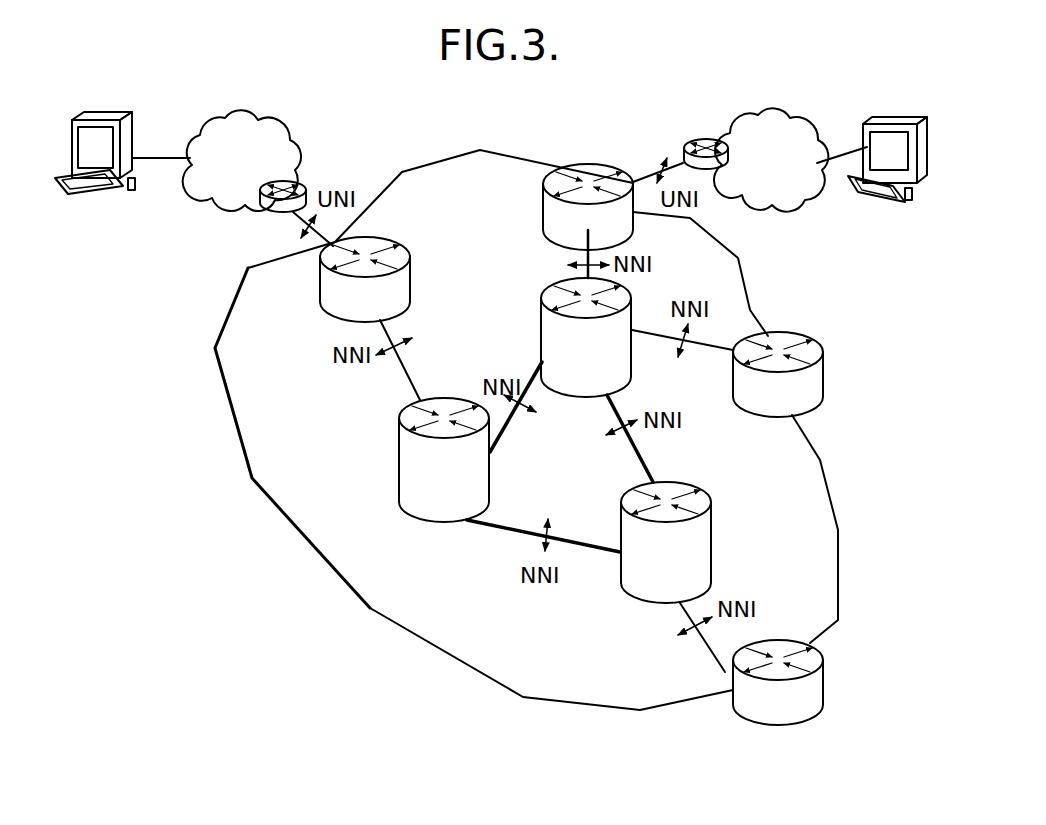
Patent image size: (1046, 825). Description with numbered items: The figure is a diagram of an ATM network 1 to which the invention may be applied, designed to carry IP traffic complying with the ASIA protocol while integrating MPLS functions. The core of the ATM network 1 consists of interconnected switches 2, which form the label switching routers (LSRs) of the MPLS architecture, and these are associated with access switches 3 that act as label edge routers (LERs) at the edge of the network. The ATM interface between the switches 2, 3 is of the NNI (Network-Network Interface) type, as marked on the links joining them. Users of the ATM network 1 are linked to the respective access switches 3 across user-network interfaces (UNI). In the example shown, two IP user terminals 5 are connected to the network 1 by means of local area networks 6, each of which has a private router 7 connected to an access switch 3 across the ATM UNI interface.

The ATM network 1 is at (289, 520).
The switch 2 is at (398, 465).
The access switch 3 is at (393, 240).
The IP user terminal 5 is at (103, 115).
The local area network 6 is at (248, 125).
The private router 7 is at (270, 217).